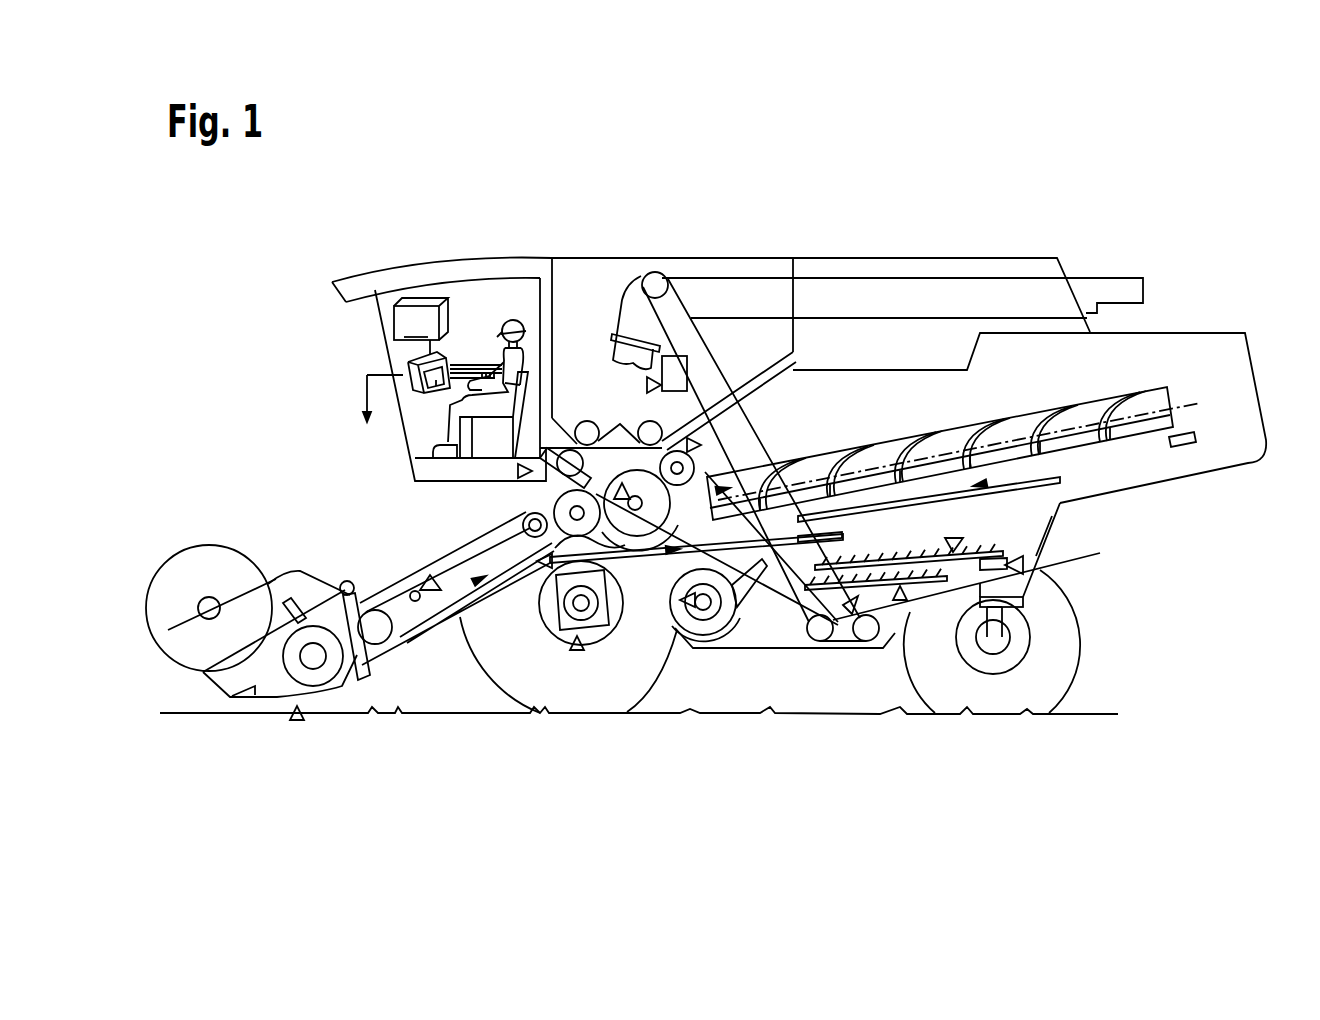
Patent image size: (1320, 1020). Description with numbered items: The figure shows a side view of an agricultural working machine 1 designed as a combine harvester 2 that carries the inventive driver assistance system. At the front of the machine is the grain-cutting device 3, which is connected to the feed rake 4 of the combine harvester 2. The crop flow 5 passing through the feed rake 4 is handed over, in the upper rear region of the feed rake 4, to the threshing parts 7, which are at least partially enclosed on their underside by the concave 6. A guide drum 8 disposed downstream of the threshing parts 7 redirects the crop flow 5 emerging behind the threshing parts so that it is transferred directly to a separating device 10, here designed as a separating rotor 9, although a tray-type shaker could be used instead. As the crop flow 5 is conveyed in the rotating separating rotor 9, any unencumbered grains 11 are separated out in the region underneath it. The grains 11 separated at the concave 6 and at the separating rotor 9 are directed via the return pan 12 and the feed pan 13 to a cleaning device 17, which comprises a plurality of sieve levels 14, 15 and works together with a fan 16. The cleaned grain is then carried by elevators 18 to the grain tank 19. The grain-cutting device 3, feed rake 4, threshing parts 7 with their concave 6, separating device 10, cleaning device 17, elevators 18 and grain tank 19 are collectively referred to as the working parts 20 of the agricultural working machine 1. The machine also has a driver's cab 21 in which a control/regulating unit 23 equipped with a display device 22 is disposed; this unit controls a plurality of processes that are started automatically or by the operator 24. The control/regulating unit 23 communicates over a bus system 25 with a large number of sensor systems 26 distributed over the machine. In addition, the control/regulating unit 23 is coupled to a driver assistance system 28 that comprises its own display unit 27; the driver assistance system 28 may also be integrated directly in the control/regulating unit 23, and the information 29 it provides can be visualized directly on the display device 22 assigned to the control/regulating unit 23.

The agricultural working machine 1 is at (290, 284).
The combine harvester 2 is at (706, 470).
The grain-cutting device 3 is at (280, 552).
The feed rake 4 is at (383, 590).
The crop flow 5 is at (432, 735).
The concave 6 is at (662, 553).
The threshing parts 7 is at (621, 434).
The guide drum 8 is at (677, 452).
The separating rotor 9 is at (1122, 410).
The separating device 10 is at (953, 412).
The grains 11 is at (983, 480).
The return pan 12 is at (1017, 490).
The feed pan 13 is at (802, 520).
The sieve level 14 is at (930, 585).
The sieve level 15 is at (1033, 568).
The fan 16 is at (715, 607).
The cleaning device 17 is at (833, 620).
The elevators 18 is at (740, 495).
The grain tank 19 is at (560, 282).
The working parts 20 is at (706, 465).
The driver's cab 21 is at (466, 295).
The display device 22 is at (415, 393).
The control/regulating unit 23 is at (466, 332).
The operator 24 is at (513, 320).
The bus system 25 is at (367, 396).
The sensor systems 26 is at (693, 438).
The display unit 27 is at (416, 300).
The driver assistance system 28 is at (383, 323).
The information 29 is at (416, 324).